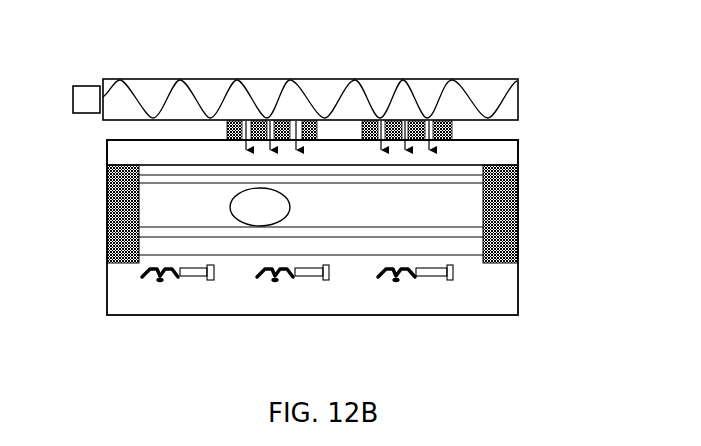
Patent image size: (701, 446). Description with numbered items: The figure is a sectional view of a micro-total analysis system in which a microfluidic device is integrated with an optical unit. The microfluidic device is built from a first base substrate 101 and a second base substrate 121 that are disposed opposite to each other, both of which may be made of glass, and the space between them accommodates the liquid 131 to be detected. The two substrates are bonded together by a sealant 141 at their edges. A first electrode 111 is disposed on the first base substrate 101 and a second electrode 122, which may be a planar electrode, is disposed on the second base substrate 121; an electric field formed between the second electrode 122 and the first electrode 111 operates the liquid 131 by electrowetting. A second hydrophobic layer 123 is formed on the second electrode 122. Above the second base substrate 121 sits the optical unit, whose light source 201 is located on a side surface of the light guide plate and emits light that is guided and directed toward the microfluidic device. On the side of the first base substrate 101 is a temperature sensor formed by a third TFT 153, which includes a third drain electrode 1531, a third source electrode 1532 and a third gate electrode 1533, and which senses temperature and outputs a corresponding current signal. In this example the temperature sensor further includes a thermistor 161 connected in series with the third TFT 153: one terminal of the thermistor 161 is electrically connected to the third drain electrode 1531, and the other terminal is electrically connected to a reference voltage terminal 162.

The light source 201 is at (295, 70).
The first base substrate 101 is at (356, 242).
The second base substrate 121 is at (348, 150).
The second electrode 122 is at (517, 172).
The second hydrophobic layer 123 is at (370, 212).
The sealant 141 is at (348, 215).
The first electrode 111 is at (257, 244).
The liquid to be detected 131 is at (250, 204).
The third TFT 153 is at (278, 326).
The third drain electrode 1531 is at (208, 302).
The third source electrode 1532 is at (143, 278).
The third gate electrode 1533 is at (205, 318).
The thermistor 161 is at (313, 317).
The reference voltage terminal 162 is at (327, 277).